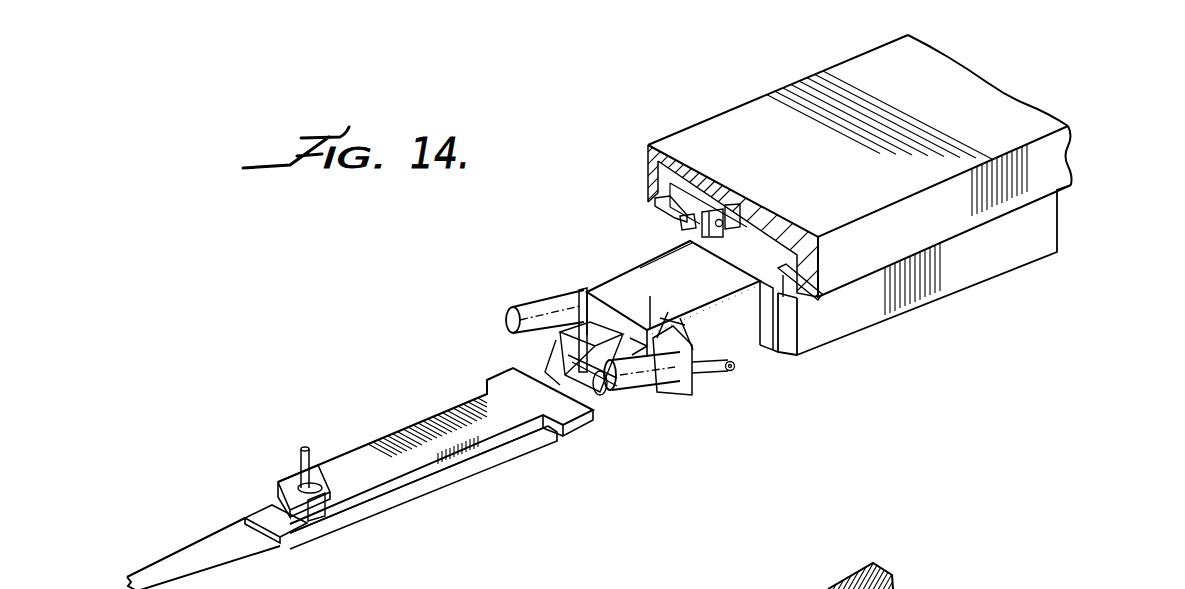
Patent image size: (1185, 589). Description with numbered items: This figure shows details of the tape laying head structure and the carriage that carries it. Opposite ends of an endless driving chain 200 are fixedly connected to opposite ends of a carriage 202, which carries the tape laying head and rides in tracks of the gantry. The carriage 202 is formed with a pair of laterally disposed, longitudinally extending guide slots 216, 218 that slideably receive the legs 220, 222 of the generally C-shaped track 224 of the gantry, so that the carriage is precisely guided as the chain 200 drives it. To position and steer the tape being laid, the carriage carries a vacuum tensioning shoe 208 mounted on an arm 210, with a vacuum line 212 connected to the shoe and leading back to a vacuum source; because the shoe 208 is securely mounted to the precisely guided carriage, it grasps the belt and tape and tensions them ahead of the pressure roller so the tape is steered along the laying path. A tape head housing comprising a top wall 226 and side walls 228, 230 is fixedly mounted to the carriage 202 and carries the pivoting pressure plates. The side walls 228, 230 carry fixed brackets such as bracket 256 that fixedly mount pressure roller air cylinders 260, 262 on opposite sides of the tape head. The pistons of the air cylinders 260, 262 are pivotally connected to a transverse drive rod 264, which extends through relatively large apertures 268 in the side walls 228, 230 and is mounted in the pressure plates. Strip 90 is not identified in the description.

The tape strip 90 is at (177, 556).
The endless driving chain 200 is at (716, 212).
The carriage 202 is at (573, 267).
The vacuum tensioning shoe 208 is at (275, 511).
The arm 210 is at (416, 430).
The vacuum line 212 is at (298, 452).
The guide slot 216 is at (665, 205).
The guide slot 218 is at (762, 273).
The leg 220 is at (681, 220).
The leg 222 is at (792, 297).
The C-shaped track 224 is at (822, 73).
The top wall 226 is at (513, 437).
The side wall 228 is at (577, 295).
The side wall 230 is at (743, 343).
The bracket 256 is at (687, 312).
The pressure roller air cylinder 260 is at (663, 397).
The pressure roller air cylinder 262 is at (512, 307).
The transverse drive rod 264 is at (772, 362).
The aperture 268 is at (710, 355).